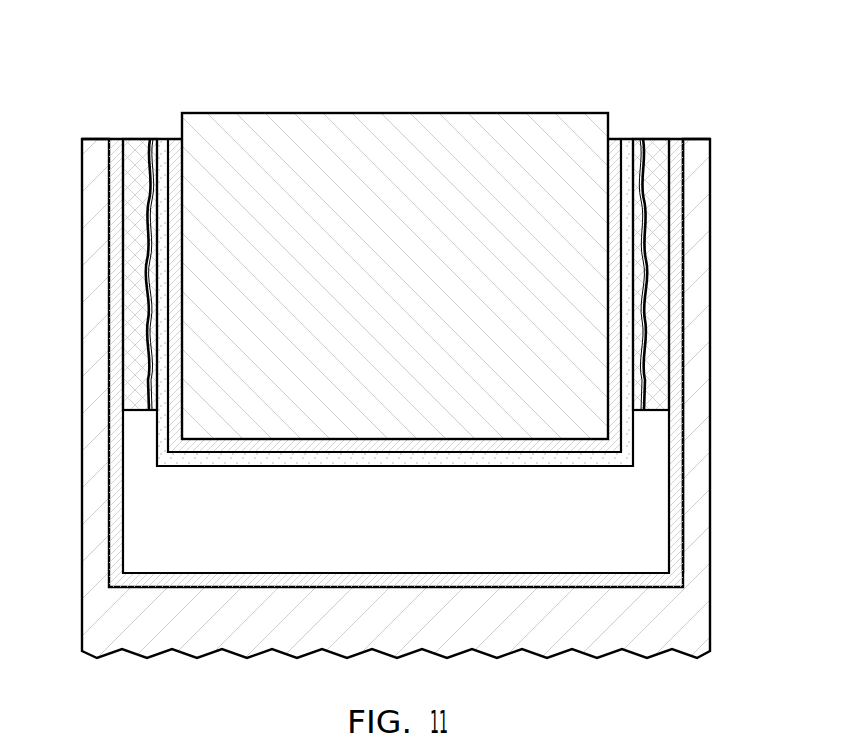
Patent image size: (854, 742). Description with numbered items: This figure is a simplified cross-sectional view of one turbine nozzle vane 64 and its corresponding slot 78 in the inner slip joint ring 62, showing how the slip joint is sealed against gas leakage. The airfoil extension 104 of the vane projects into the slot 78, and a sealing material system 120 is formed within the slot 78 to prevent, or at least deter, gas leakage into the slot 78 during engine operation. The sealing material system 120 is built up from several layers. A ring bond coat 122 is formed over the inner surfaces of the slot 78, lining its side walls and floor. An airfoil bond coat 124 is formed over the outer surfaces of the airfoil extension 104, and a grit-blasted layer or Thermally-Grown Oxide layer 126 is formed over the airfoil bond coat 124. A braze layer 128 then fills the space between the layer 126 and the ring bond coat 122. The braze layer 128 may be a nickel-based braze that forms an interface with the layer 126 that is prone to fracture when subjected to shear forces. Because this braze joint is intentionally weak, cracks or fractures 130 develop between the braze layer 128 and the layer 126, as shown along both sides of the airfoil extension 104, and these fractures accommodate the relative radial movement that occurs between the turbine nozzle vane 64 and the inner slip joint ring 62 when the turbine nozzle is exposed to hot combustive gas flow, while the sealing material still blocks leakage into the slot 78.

The inner slip joint ring 62 is at (562, 629).
The turbine nozzle vane 64 is at (395, 252).
The slot 78 is at (410, 514).
The airfoil extension 104 is at (415, 292).
The sealing material system 120 is at (690, 198).
The ring bond coat 122 is at (202, 577).
The airfoil bond coat 124 is at (245, 446).
The grit-blasted layer or Thermally-Grown Oxide (TGO) layer 126 is at (293, 464).
The braze layer 128 is at (142, 147).
The cracks or fractures 130 is at (140, 301).